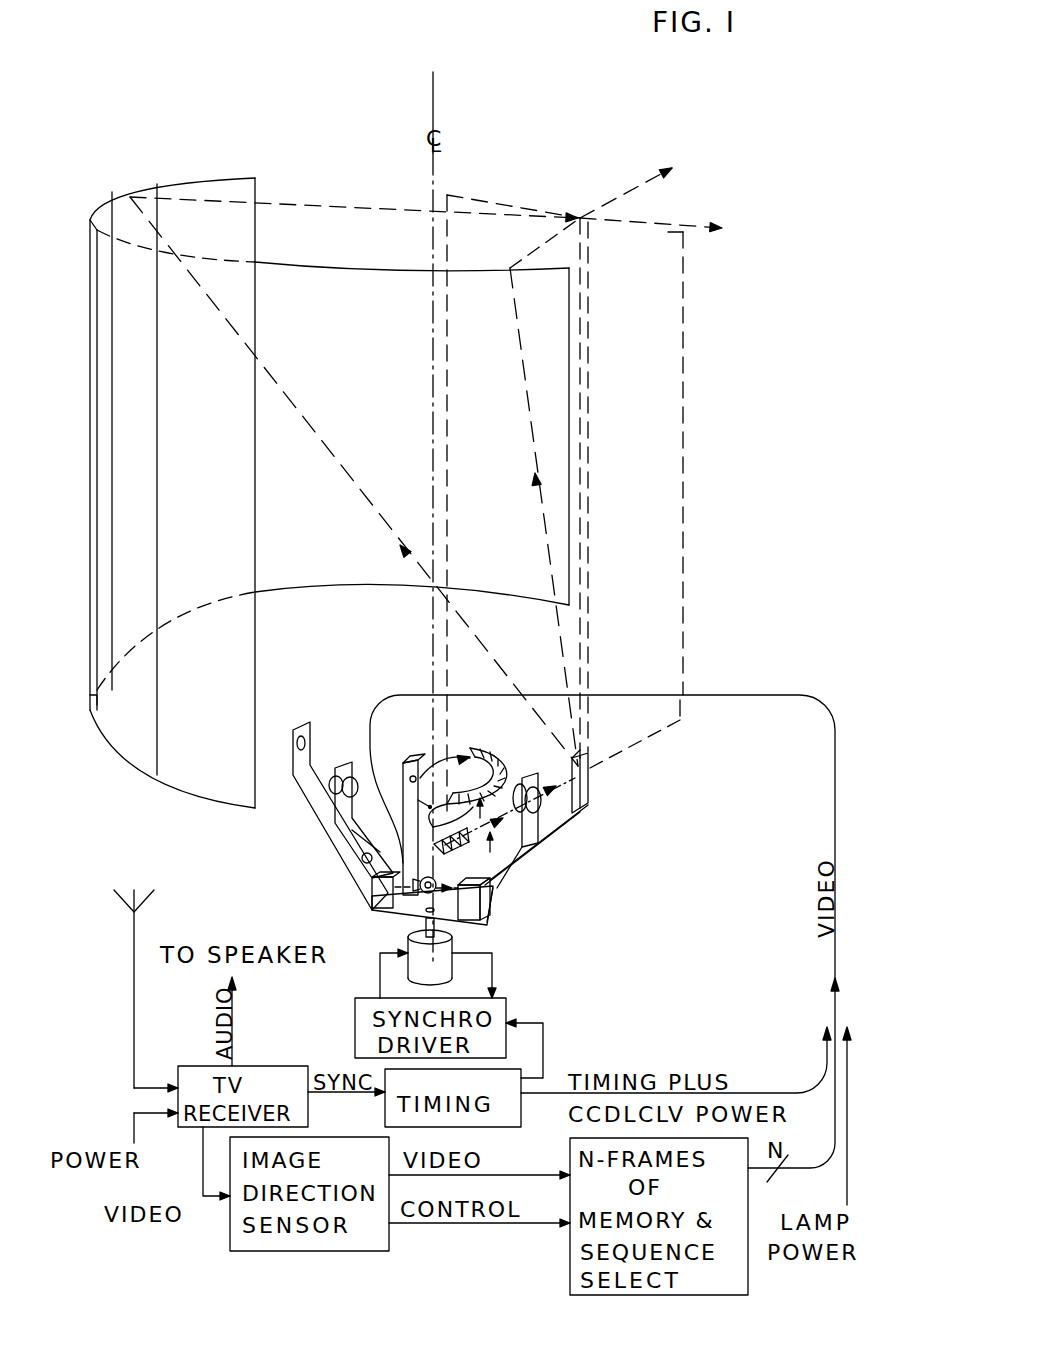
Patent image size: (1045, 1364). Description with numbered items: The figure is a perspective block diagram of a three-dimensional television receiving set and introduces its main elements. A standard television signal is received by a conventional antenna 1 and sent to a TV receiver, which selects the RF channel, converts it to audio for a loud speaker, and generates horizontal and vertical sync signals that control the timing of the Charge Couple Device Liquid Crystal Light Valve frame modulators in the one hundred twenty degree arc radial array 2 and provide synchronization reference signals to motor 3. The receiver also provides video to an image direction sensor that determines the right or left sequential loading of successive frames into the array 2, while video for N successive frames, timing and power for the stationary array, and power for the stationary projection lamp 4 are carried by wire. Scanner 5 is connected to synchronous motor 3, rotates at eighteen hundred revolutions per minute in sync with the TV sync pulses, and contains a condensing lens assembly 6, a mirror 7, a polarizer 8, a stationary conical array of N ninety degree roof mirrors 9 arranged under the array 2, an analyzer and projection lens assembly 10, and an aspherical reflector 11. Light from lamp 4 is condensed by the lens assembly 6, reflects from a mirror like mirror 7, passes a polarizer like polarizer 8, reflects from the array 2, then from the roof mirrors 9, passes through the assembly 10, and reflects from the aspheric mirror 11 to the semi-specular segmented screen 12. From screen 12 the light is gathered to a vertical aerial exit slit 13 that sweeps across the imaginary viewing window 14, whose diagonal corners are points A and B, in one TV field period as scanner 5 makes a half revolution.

The antenna 1 is at (136, 890).
The 120 degree arc radial array of CCDLCLV TV frame modulators 2 is at (483, 752).
The synchronous motor 3 is at (452, 960).
The projection lamp 4 is at (420, 893).
The scanner 5 is at (593, 797).
The condensing lens assembly 6 is at (485, 915).
The mirror 7 is at (365, 890).
The polarizer 8 is at (368, 855).
The conical array of N 90 degree roof mirrors 9 is at (458, 850).
The analyzer and projection lens assembly 10 is at (540, 806).
The aspherical reflector 11 is at (572, 770).
The semi-specular and segmented screen 12 is at (300, 262).
The vertical aerial exit slit 13 is at (590, 262).
The imaginary viewing window 14 is at (523, 205).
The diagonal corner point of window A is at (450, 195).
The diagonal corner point of window B is at (680, 716).